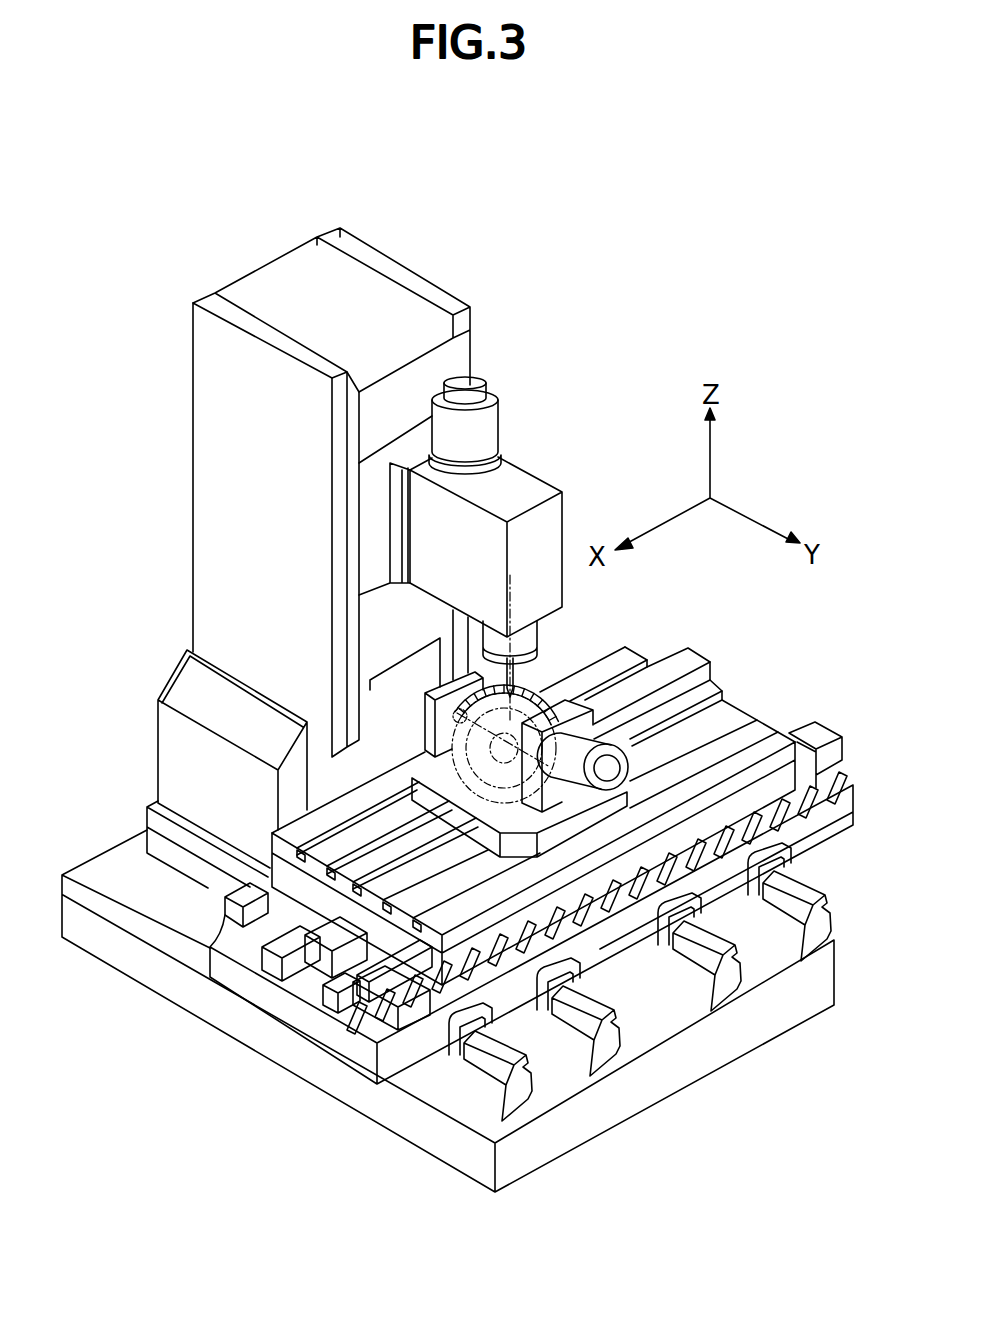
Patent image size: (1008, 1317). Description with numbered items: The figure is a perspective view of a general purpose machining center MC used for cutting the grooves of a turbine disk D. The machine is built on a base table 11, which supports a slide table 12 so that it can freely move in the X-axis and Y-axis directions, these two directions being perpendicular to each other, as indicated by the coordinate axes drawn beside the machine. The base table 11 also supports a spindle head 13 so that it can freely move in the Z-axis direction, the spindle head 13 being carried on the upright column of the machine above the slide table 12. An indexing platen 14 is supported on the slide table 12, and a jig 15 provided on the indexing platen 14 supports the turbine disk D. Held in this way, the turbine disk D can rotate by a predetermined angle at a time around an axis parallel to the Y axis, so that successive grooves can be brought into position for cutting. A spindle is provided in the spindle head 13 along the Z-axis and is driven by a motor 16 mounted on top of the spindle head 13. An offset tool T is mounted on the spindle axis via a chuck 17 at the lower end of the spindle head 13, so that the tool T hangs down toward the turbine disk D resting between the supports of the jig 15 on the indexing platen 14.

The general purpose machining center MC is at (168, 573).
The base table 11 is at (128, 868).
The slide table 12 is at (747, 727).
The spindle head 13 is at (532, 488).
The indexing platen 14 is at (420, 764).
The jig 15 is at (522, 786).
The motor 16 is at (483, 428).
The chuck 17 is at (527, 633).
The offset tool T is at (516, 686).
The turbine disk D is at (582, 761).